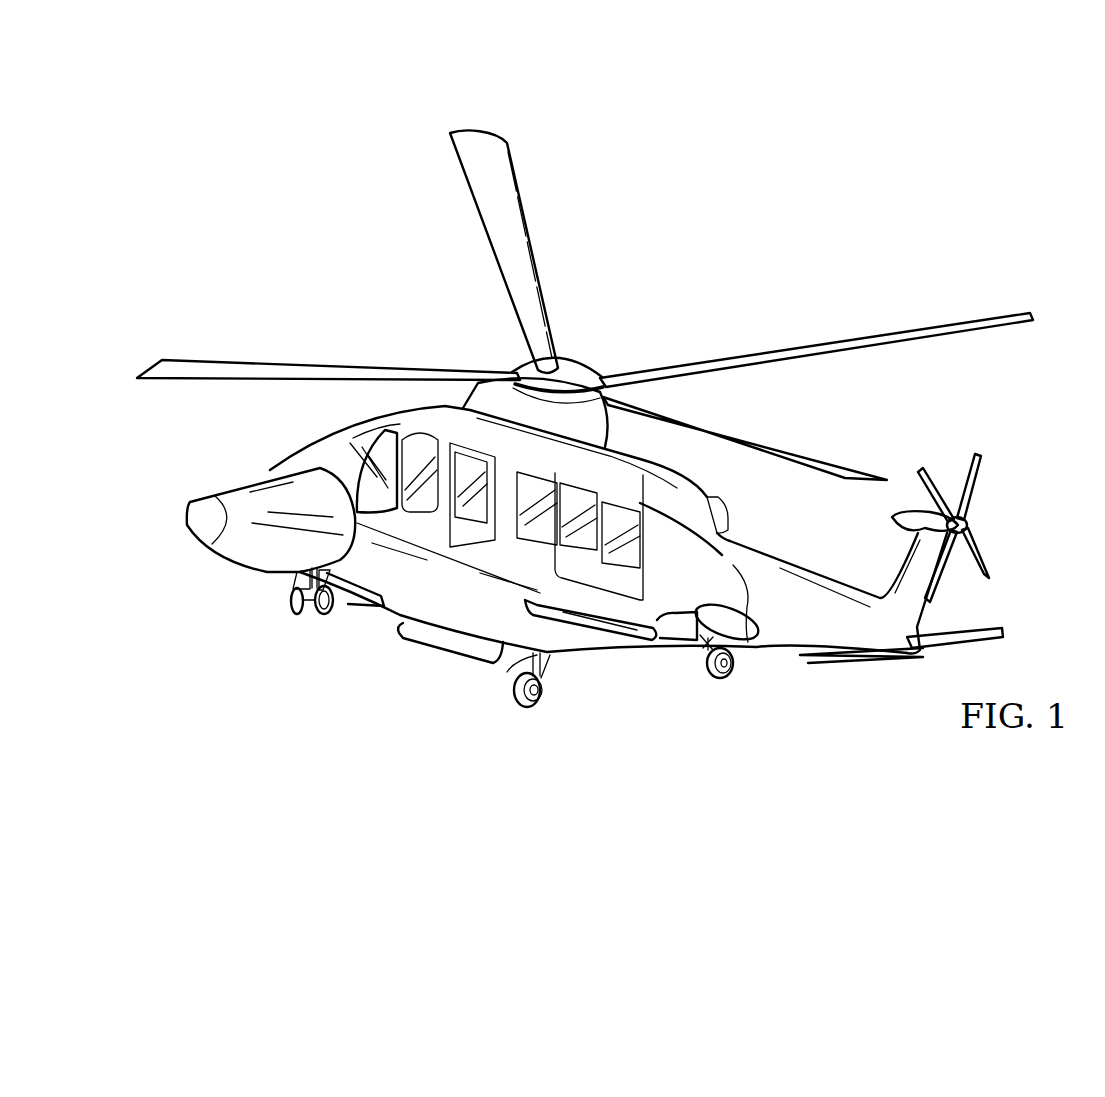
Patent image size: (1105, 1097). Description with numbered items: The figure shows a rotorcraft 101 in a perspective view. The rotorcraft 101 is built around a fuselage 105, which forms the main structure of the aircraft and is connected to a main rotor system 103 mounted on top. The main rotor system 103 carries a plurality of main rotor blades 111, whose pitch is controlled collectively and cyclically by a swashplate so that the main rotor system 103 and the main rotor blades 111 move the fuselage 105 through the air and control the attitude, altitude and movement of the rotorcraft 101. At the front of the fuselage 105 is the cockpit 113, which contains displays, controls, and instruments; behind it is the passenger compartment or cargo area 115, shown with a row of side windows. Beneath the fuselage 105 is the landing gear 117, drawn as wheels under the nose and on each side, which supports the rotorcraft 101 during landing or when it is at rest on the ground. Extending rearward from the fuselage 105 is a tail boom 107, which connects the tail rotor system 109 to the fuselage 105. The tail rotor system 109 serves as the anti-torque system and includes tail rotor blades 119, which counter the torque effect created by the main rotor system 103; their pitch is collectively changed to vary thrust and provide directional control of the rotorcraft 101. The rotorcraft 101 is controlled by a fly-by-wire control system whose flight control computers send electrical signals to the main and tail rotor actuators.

The rotorcraft 101 is at (276, 119).
The main rotor system 103 is at (593, 338).
The fuselage 105 is at (439, 665).
The tail boom 107 is at (780, 627).
The tail rotor system 109 is at (946, 464).
The main rotor blades 111 is at (805, 358).
The cockpit 113 is at (290, 453).
The passenger compartment or cargo area 115 is at (378, 615).
The landing gear 117 is at (302, 614).
The tail rotor blades 119 is at (968, 498).